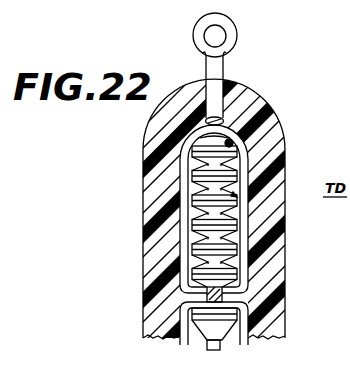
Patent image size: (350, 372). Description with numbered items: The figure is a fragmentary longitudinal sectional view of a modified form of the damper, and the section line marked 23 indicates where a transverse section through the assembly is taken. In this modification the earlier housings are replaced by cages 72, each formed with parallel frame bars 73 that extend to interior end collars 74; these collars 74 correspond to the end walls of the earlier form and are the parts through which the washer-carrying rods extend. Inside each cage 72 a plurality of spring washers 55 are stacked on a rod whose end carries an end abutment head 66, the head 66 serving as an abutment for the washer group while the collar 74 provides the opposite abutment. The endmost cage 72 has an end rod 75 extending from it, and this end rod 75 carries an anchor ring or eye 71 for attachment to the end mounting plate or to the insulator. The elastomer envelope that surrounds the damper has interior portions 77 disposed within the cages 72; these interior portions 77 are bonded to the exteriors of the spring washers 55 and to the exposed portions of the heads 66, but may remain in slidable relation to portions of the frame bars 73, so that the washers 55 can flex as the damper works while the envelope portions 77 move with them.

The anchor ring or eye 71 is at (233, 33).
The end rod 75 is at (224, 63).
The end abutment head 66 is at (231, 145).
The spring washer 55 is at (232, 180).
The interior portion of elastomer envelope 77 is at (236, 194).
The cage 72 is at (255, 234).
The frame bar 73 is at (182, 195).
The interior end collar 74 is at (245, 305).
The section line 23- 23 is at (153, 268).